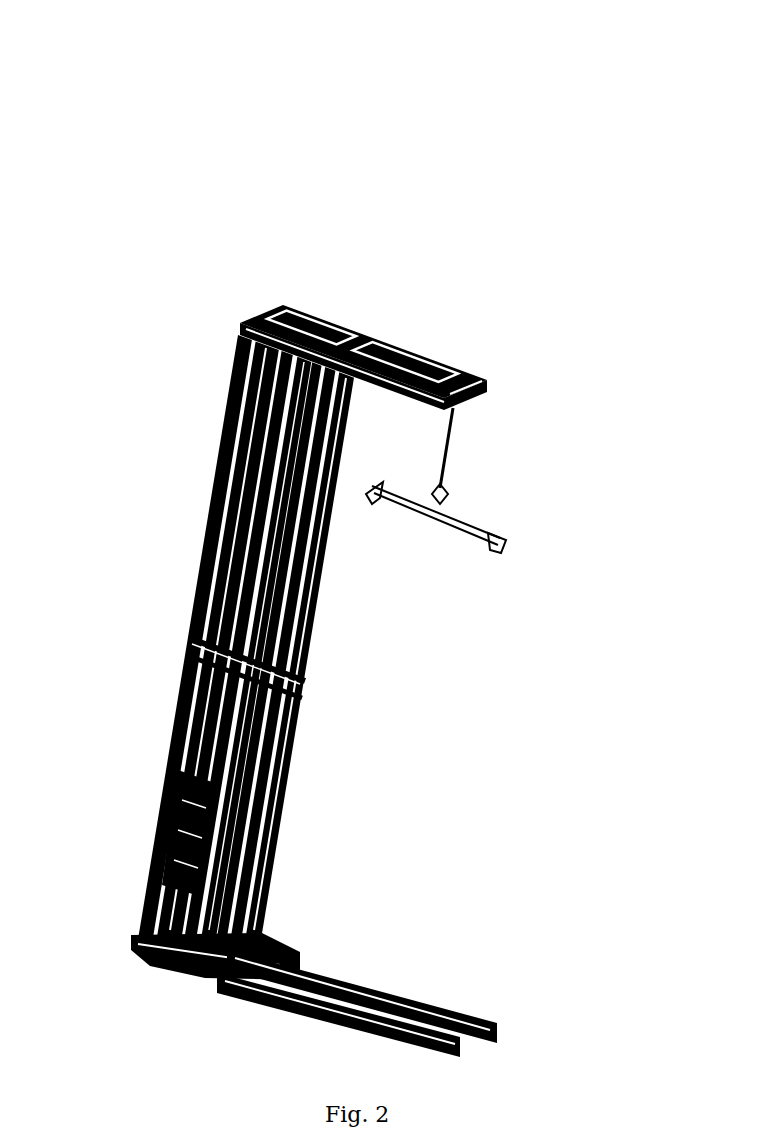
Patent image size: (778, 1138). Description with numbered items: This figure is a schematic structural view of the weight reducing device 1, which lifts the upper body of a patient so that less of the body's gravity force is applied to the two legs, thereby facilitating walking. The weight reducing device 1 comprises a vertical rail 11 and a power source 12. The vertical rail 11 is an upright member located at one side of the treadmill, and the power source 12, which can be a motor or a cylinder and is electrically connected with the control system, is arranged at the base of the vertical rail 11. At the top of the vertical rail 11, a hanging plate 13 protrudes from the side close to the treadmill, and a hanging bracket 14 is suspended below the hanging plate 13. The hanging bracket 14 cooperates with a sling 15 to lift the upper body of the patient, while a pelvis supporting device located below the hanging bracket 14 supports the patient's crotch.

The weight reducing device 1 is at (150, 155).
The vertical rail 11 is at (190, 613).
The power source 12 is at (135, 953).
The hanging plate 13 is at (462, 377).
The hanging bracket 14 is at (430, 507).
The sling 15 is at (455, 452).